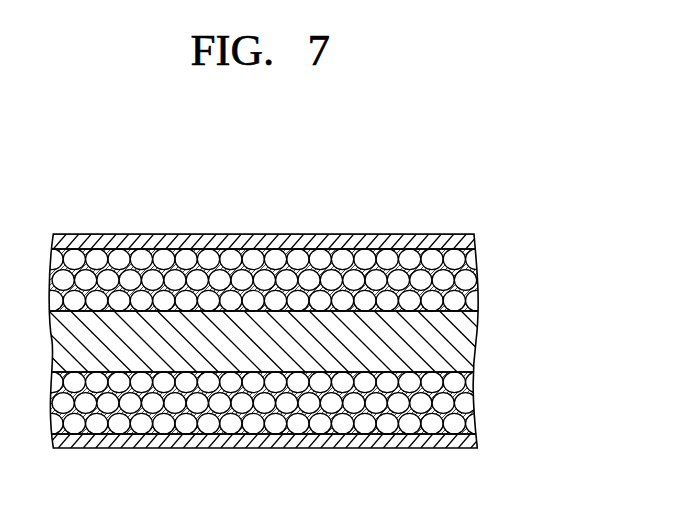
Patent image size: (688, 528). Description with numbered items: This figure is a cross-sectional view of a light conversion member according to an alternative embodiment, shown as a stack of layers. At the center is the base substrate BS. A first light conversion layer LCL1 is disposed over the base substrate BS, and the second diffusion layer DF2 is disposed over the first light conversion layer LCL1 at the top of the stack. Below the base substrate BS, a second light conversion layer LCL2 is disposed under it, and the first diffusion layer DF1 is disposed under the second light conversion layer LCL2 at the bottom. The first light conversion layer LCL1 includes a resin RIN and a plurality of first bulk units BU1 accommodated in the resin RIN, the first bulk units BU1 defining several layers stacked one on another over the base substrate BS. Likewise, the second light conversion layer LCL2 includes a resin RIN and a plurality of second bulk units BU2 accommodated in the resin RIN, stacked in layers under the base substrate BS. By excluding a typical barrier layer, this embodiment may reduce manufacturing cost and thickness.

The second diffusion layer DF2 is at (468, 241).
The first bulk units BU1 is at (458, 260).
The resin RIN is at (458, 286).
The first light conversion layer LCL1 is at (326, 280).
The base substrate BS is at (468, 342).
The second bulk units BU2 is at (458, 383).
The second light conversion layer LCL2 is at (327, 403).
The first diffusion layer DF1 is at (468, 442).